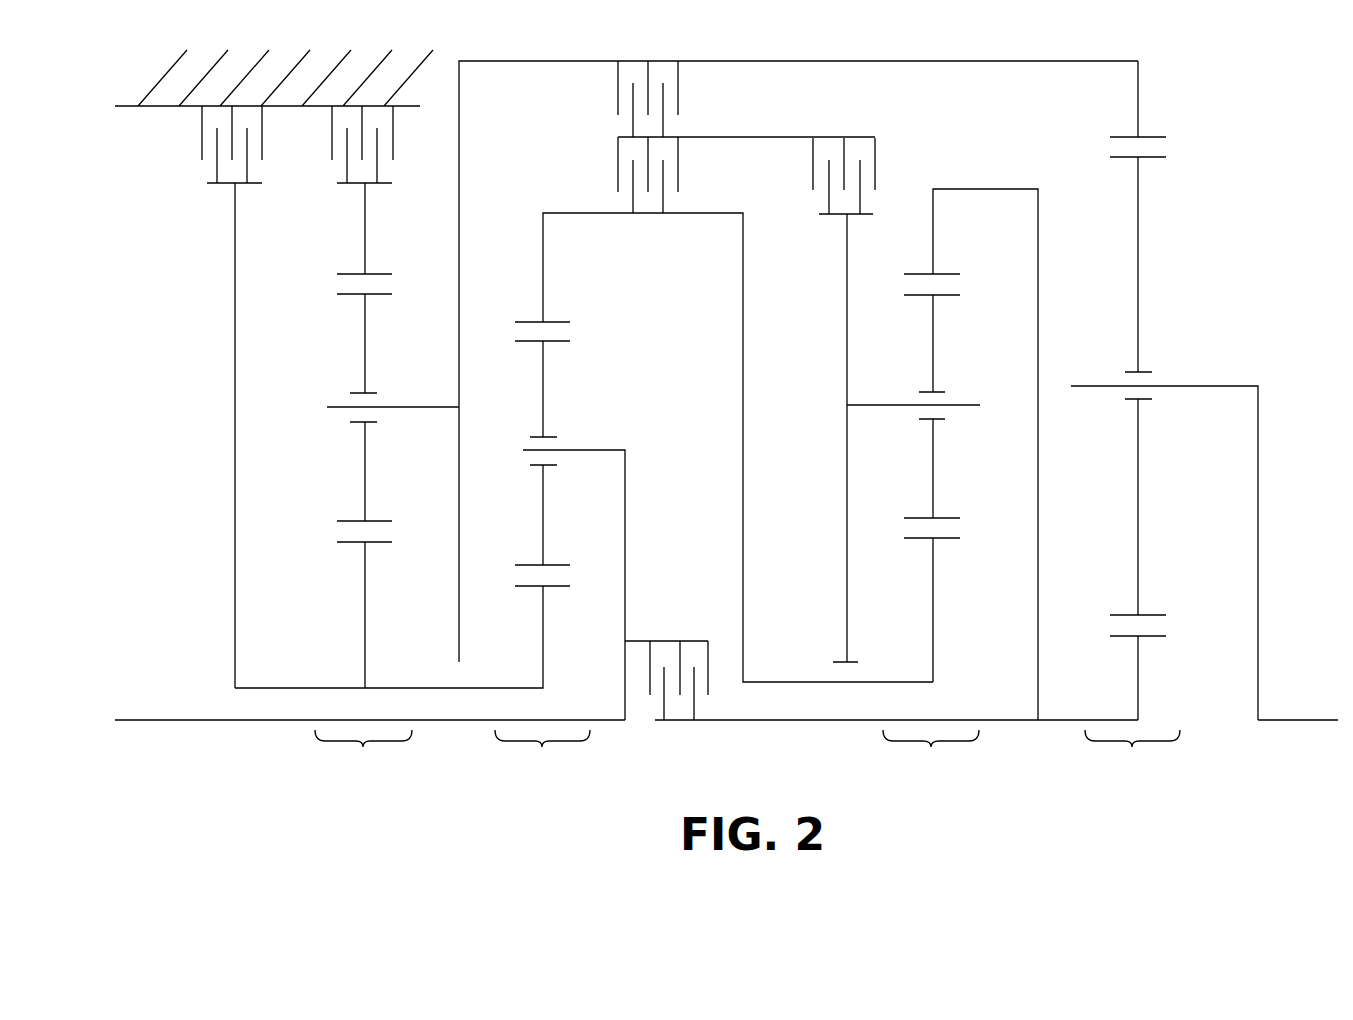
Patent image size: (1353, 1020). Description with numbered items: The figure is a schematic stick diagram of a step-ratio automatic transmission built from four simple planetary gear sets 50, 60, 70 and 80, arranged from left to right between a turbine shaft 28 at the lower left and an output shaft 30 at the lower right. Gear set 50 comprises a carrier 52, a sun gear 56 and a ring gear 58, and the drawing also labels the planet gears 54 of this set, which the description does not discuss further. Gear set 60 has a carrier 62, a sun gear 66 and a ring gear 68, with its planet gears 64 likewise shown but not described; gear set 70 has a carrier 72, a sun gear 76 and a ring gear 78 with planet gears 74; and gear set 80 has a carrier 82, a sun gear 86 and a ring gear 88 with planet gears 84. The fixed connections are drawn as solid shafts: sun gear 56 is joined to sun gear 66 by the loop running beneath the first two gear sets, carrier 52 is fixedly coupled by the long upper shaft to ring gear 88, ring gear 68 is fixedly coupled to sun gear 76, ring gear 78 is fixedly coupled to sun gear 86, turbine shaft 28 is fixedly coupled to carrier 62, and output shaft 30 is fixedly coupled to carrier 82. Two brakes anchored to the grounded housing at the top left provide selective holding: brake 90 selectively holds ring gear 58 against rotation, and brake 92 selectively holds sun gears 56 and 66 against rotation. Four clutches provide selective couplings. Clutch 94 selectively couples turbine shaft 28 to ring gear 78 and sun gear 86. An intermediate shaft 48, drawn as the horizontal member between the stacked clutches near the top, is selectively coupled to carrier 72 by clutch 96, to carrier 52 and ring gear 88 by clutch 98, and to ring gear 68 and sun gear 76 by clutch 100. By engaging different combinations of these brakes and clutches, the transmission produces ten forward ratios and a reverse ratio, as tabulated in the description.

The turbine shaft 28 is at (225, 720).
The output shaft 30 is at (1297, 720).
The intermediate shaft 48 is at (730, 137).
The planetary gear set 50 is at (363, 755).
The carrier 52 is at (459, 227).
The gear 54 is at (365, 360).
The sun gear 56 is at (365, 607).
The ring gear 58 is at (365, 208).
The planetary gear set 60 is at (542, 756).
The carrier 62 is at (625, 545).
The gear 64 is at (543, 407).
The sun gear 66 is at (543, 650).
The ring gear 68 is at (543, 255).
The planetary gear set 70 is at (931, 757).
The carrier 72 is at (847, 318).
The gear 74 is at (933, 359).
The sun gear 76 is at (933, 603).
The ring gear 78 is at (933, 207).
The planetary gear set 80 is at (1132, 756).
The carrier 82 is at (1258, 552).
The gear 84 is at (1138, 223).
The sun gear 86 is at (1138, 701).
The ring gear 88 is at (1138, 72).
The brake 90 is at (332, 150).
The brake 92 is at (202, 153).
The clutch 94 is at (643, 641).
The clutch 96 is at (875, 152).
The clutch 98 is at (618, 78).
The clutch 100 is at (618, 177).